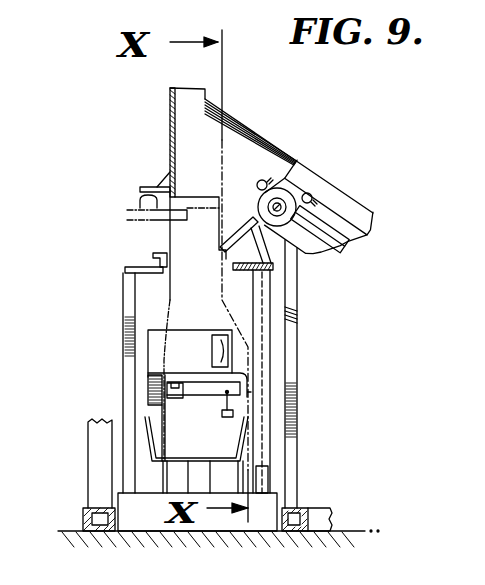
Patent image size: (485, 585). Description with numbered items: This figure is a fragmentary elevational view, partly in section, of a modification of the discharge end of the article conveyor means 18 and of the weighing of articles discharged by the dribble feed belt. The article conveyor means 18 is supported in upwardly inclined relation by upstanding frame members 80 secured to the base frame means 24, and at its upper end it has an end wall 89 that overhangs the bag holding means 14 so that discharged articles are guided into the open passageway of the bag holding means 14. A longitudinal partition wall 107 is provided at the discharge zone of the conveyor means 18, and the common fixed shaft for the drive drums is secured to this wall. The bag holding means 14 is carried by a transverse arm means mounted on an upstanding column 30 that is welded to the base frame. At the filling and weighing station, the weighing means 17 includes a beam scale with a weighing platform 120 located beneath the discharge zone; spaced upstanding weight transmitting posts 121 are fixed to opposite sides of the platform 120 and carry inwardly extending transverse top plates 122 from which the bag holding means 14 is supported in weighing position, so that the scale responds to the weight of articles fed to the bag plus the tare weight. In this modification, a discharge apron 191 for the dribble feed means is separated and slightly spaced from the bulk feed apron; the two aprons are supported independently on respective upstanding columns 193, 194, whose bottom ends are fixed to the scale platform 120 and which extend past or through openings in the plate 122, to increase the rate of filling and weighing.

The end wall 89 is at (170, 138).
The article conveyor means 18 is at (355, 190).
The longitudinal partition wall 107 is at (298, 182).
The discharge apron 191 is at (240, 192).
The bag holding means 14 is at (158, 233).
The top plate 122 is at (248, 271).
The weight transmitting post 121 is at (123, 328).
The upstanding column 193 is at (258, 360).
The upstanding frame member 80 is at (294, 428).
The weighing means 17 is at (201, 453).
The column 30 is at (90, 472).
The upstanding column 194 is at (265, 482).
The base frame means 24 is at (329, 494).
The weighing platform 120 is at (147, 494).